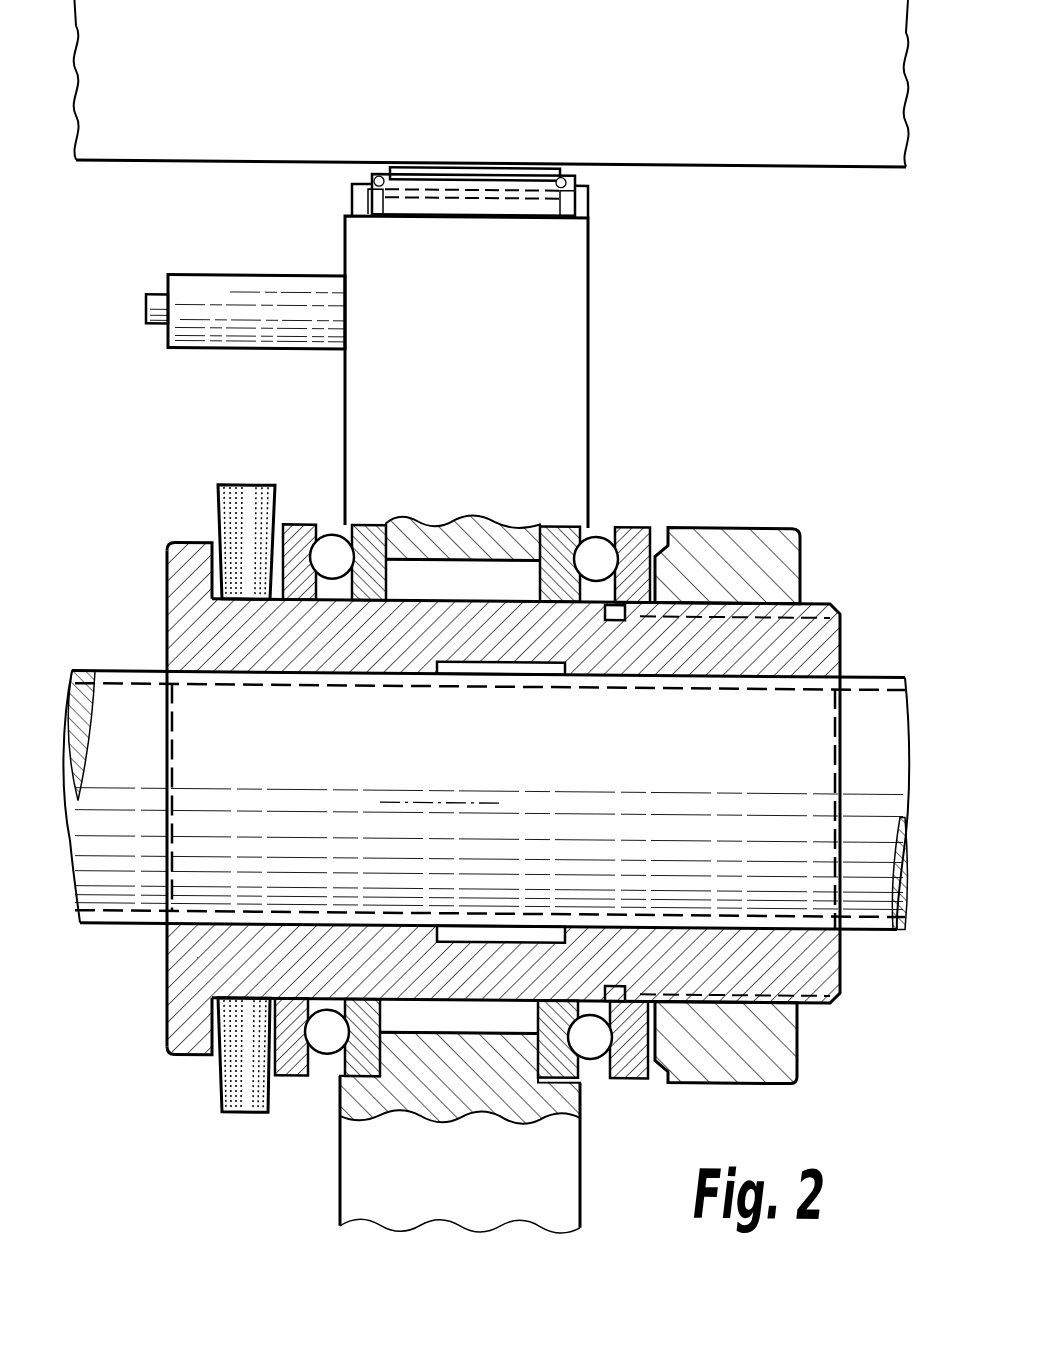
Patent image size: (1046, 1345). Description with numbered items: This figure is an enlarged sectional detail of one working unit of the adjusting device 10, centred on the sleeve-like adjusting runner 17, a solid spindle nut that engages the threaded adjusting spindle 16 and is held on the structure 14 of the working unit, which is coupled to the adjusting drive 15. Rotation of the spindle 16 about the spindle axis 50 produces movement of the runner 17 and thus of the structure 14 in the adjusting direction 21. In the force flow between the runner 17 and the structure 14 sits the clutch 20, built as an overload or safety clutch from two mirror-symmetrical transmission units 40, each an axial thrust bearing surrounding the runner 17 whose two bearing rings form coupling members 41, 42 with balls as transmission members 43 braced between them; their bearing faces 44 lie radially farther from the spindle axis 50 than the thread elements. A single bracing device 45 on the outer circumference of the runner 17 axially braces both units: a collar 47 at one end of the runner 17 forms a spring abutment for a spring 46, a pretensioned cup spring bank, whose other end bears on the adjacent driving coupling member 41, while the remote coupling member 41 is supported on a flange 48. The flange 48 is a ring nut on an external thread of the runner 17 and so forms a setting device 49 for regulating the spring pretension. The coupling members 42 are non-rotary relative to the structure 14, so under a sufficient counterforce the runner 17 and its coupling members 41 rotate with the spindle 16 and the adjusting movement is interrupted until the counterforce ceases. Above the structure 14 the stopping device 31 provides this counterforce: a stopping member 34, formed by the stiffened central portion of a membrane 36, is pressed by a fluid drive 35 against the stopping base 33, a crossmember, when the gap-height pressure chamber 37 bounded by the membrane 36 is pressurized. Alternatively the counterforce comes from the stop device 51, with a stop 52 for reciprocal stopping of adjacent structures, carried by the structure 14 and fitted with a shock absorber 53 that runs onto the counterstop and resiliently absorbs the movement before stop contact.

The adjusting device 10 is at (887, 485).
The structure 14 is at (345, 380).
The adjusting drive 15 is at (900, 617).
The adjusting spindle 16 is at (855, 900).
The adjusting runner 17 is at (646, 945).
The clutch 20 is at (713, 428).
The adjusting direction 21 is at (733, 726).
The stopping device 31 is at (282, 183).
The stopping base 33 is at (706, 163).
The stopping member 34 is at (495, 164).
The fluid drive 35 is at (590, 190).
The membrane 36 is at (563, 172).
The pressure chamber 37 is at (432, 190).
The transmission unit 40 is at (316, 468).
The driving coupling member 41 is at (300, 518).
The coupling member 42 is at (380, 520).
The transmission members 43 is at (338, 527).
The bearing faces 44 is at (318, 598).
The bracing device 45 is at (233, 442).
The spring 46 is at (238, 498).
The collar 47 is at (190, 538).
The flange 48 is at (728, 535).
The setting device 49 is at (790, 497).
The spindle axis 50 is at (472, 795).
The stop device 51 is at (146, 240).
The stop 52 is at (170, 340).
The shock absorber 53 is at (146, 306).